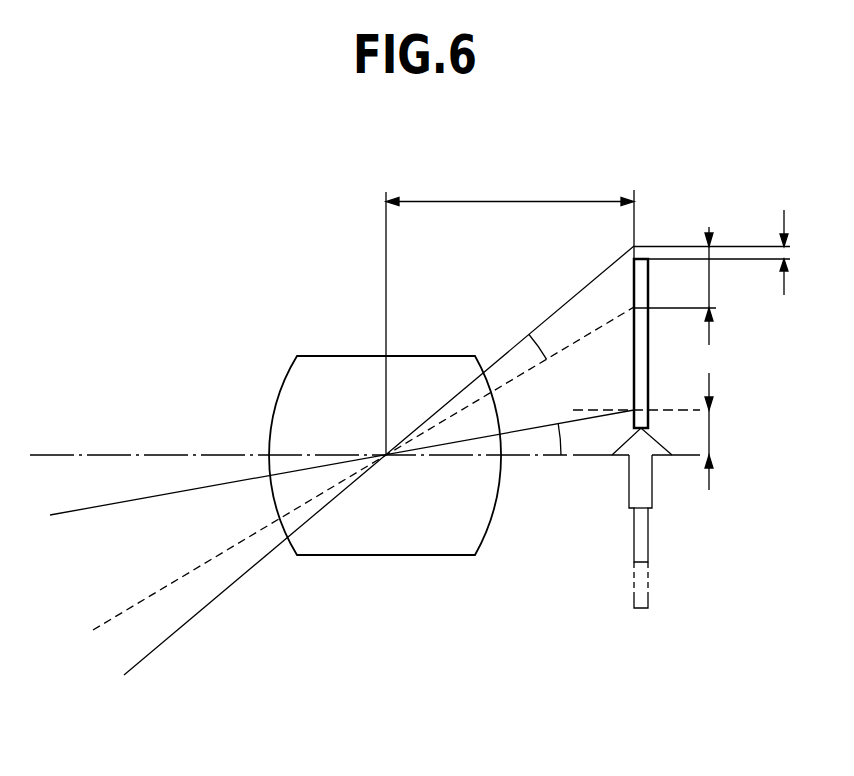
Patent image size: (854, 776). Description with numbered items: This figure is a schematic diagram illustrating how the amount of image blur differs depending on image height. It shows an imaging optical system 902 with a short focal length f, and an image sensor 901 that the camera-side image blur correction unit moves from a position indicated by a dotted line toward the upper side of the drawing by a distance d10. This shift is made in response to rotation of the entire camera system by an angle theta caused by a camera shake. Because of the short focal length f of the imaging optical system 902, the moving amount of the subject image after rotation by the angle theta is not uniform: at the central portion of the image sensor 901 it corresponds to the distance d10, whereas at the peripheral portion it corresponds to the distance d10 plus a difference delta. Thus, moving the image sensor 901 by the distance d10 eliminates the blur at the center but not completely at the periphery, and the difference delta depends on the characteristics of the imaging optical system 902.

The image sensor 901 is at (643, 535).
The imaging optical system 902 is at (370, 542).
The focal length f is at (510, 191).
The angle theta is at (553, 392).
The difference in moving amount delta is at (797, 252).
The distance d10 is at (732, 358).